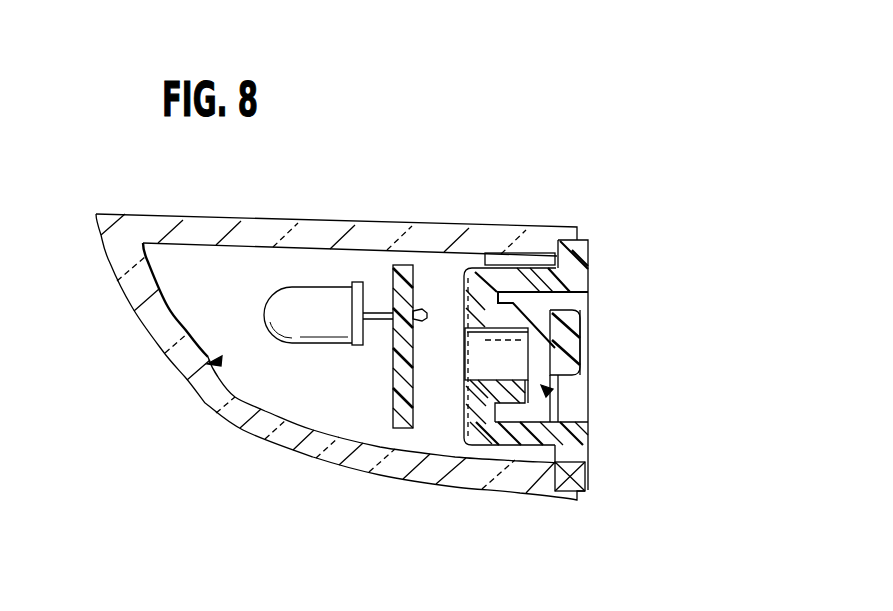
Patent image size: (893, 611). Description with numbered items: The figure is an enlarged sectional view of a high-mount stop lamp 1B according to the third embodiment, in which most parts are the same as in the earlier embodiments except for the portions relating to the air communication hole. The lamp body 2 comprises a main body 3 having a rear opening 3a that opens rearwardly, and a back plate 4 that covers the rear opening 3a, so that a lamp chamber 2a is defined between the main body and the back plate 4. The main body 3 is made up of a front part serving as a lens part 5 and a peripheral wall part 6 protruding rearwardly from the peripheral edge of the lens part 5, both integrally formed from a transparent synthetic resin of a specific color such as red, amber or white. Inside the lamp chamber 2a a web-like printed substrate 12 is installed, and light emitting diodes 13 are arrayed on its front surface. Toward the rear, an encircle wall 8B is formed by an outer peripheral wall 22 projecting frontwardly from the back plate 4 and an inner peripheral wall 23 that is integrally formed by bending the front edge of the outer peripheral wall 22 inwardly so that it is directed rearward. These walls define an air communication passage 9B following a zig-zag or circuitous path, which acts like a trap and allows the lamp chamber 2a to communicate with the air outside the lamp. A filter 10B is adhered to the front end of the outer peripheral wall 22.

The high-mount stop lamp 1B is at (480, 97).
The lamp body 2 is at (690, 157).
The lamp chamber 2a is at (252, 296).
The main body 3 is at (513, 223).
The rear opening 3a is at (543, 472).
The back plate 4 is at (592, 252).
The lens part 5 is at (138, 303).
The peripheral wall part 6 is at (503, 496).
The encircle wall 8B is at (481, 263).
The air communication passage 9B is at (548, 391).
The filter 10B is at (463, 405).
The printed substrate 12 is at (393, 396).
The light emitting diode 13 is at (303, 333).
The outer peripheral wall 22 is at (538, 432).
The inner peripheral wall 23 is at (513, 313).